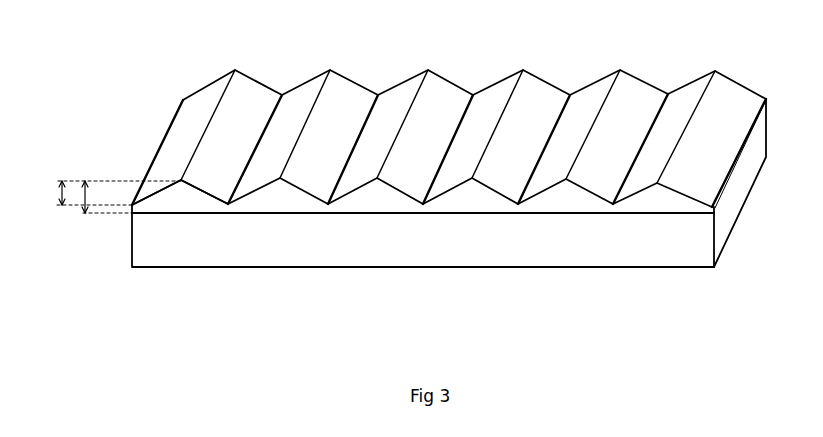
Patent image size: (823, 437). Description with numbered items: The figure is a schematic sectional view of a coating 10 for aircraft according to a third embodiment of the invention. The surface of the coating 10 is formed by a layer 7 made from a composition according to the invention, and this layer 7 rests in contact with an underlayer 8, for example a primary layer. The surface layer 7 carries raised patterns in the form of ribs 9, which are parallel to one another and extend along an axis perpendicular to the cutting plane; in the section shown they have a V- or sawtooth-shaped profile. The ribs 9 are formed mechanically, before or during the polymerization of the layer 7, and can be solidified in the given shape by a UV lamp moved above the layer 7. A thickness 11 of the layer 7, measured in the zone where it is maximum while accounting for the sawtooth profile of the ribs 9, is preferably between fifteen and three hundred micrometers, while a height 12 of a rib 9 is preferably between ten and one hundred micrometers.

The layer 7 is at (657, 204).
The underlayer 8 is at (637, 258).
The ribs 9 is at (633, 105).
The coating 10 is at (401, 189).
The thickness 11 is at (85, 199).
The height 12 is at (58, 196).